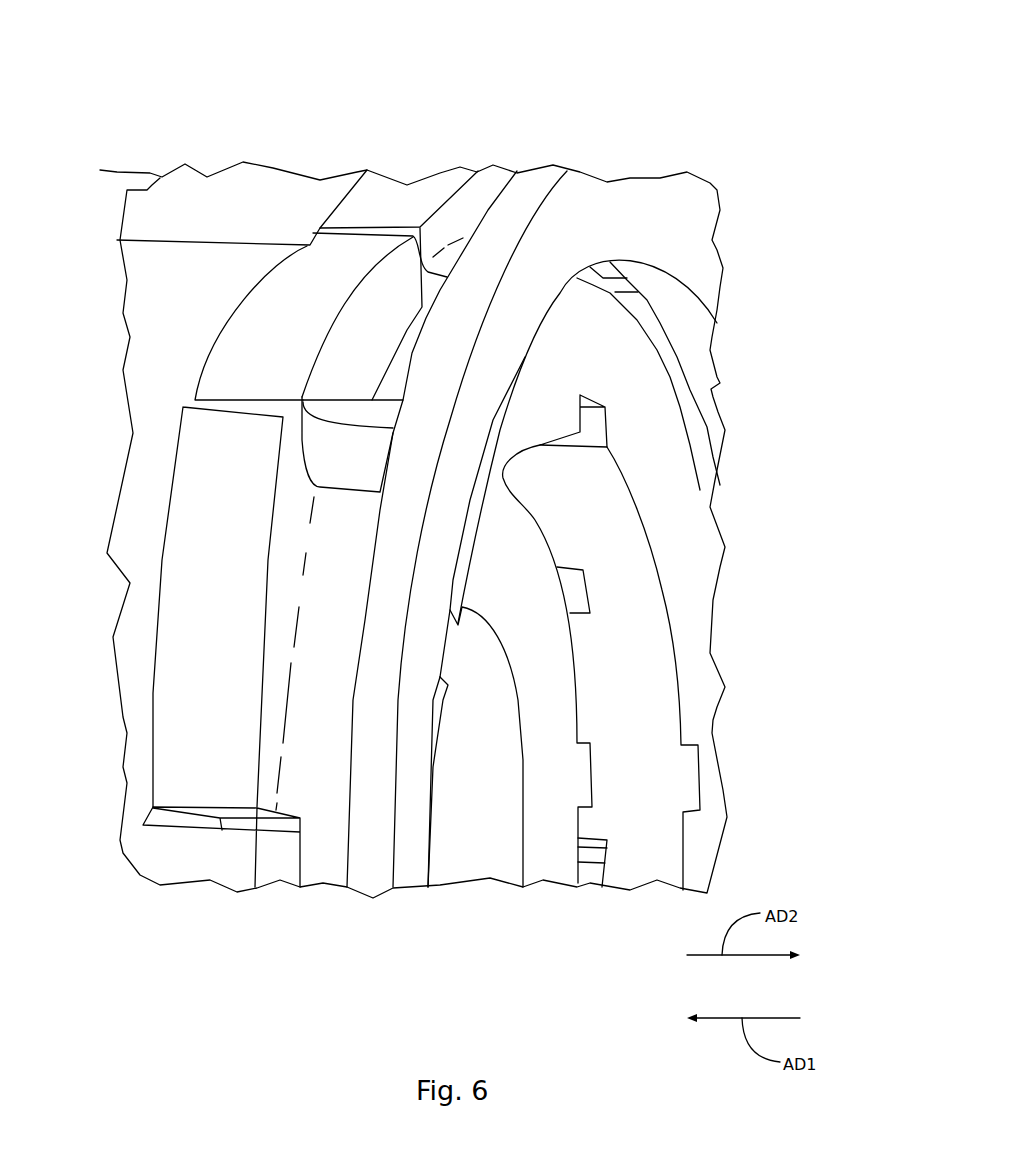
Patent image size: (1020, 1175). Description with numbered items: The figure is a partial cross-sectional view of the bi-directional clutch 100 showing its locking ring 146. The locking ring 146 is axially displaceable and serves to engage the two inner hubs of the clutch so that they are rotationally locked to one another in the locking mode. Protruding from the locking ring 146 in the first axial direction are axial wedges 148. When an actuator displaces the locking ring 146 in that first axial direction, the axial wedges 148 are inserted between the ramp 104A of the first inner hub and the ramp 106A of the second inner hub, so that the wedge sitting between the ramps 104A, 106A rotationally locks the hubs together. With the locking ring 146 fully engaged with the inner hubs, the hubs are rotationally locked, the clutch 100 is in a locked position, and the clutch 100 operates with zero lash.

The bi-directional clutch 100 is at (593, 52).
The locking ring 146 is at (653, 210).
The ramp 104A is at (268, 343).
The axial wedge 148 is at (357, 457).
The ramp 106A is at (196, 567).